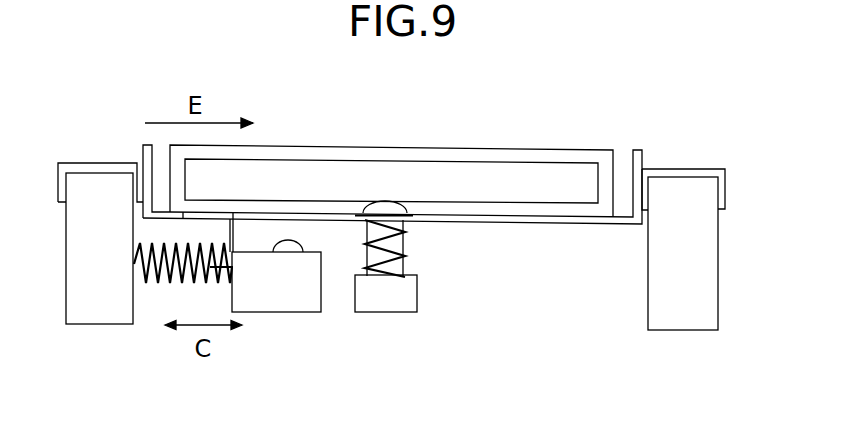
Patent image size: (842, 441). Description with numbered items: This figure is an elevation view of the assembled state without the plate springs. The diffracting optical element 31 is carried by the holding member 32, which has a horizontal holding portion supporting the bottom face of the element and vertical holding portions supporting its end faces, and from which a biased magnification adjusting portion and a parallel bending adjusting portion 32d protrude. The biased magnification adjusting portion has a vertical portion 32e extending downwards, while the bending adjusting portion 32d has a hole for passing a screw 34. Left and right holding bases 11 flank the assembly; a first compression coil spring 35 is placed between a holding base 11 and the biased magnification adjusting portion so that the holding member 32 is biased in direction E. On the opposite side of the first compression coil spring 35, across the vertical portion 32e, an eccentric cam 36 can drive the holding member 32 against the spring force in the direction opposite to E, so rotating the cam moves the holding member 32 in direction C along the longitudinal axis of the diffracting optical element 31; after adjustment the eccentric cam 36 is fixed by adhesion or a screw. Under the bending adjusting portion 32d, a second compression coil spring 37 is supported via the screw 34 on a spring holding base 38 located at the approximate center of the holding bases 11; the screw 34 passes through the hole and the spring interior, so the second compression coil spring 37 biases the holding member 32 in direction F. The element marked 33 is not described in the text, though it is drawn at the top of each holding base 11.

The holding base 11 is at (93, 323).
The diffracting optical element 31 is at (335, 173).
The holding member 32 is at (557, 236).
The bending adjusting portion 32d is at (417, 213).
The vertical portion 32e is at (236, 234).
The holder 33 is at (95, 163).
The screw 34 is at (385, 201).
The first compression coil spring 35 is at (157, 283).
The eccentric cam 36 is at (298, 300).
The second compression coil spring 37 is at (403, 245).
The spring holding base 38 is at (385, 298).